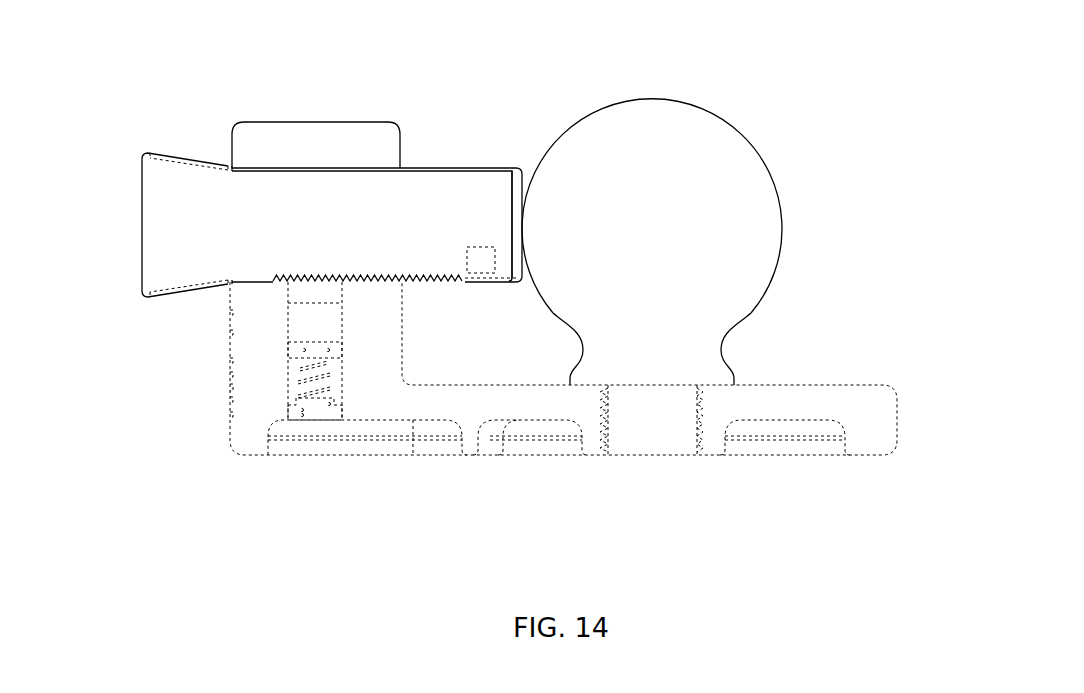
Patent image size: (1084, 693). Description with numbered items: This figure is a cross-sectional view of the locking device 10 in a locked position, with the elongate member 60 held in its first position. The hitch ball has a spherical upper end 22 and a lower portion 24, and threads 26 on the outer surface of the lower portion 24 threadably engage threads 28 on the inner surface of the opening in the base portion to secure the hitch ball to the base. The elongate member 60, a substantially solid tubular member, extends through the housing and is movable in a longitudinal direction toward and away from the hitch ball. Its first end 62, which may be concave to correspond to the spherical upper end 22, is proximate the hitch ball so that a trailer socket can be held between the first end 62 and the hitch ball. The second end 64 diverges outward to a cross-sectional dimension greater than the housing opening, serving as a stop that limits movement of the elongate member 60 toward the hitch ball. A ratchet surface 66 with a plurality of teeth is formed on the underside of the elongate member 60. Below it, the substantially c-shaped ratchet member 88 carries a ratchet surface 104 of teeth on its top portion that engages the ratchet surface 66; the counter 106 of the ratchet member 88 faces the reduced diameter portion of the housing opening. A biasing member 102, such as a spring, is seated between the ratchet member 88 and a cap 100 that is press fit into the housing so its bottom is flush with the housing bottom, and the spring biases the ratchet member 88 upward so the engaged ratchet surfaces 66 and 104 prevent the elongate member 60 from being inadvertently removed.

The locking device 10 is at (842, 99).
The spherical upper end 22 is at (753, 172).
The lower portion 24 is at (663, 422).
The threads 26 is at (698, 430).
The threads 28 is at (700, 408).
The elongate member 60 is at (428, 183).
The first end 62 is at (518, 178).
The second end 64 is at (160, 188).
The ratchet surface 66 is at (415, 280).
The ratchet member 88 is at (340, 285).
The cap 100 is at (315, 420).
The biasing member 102 is at (307, 380).
The ratchet surface 104 is at (293, 280).
The counter 106 is at (300, 328).